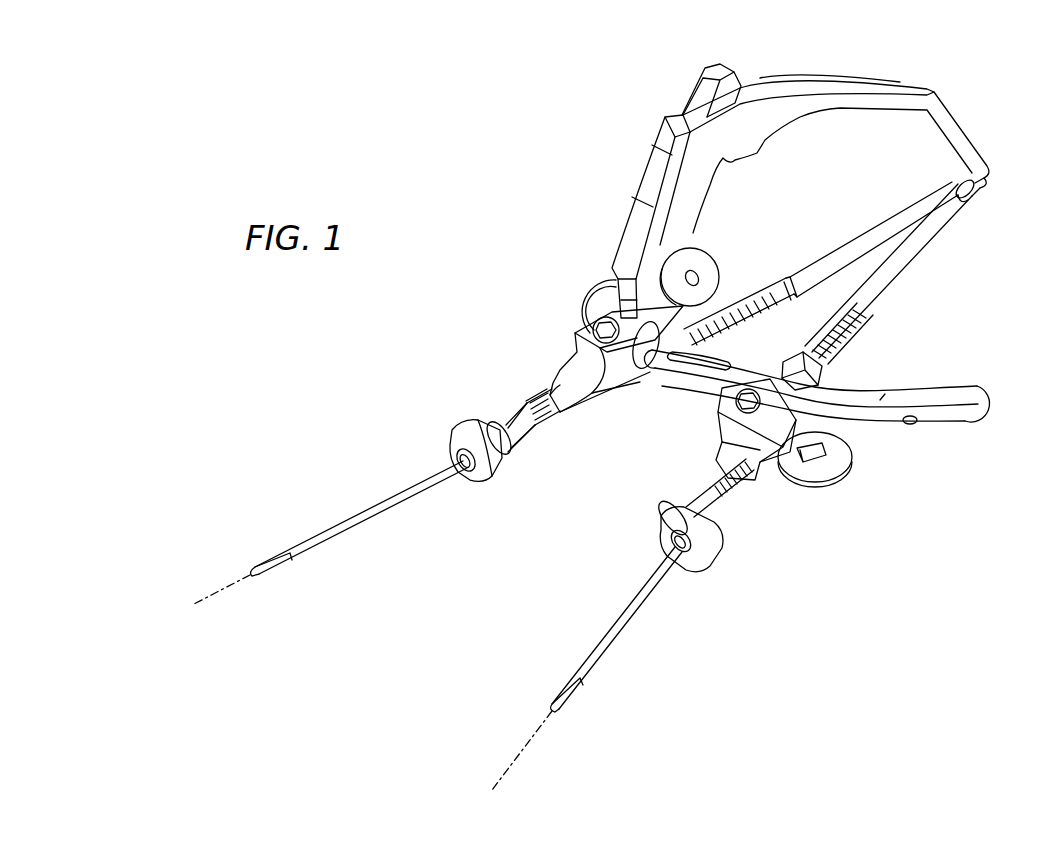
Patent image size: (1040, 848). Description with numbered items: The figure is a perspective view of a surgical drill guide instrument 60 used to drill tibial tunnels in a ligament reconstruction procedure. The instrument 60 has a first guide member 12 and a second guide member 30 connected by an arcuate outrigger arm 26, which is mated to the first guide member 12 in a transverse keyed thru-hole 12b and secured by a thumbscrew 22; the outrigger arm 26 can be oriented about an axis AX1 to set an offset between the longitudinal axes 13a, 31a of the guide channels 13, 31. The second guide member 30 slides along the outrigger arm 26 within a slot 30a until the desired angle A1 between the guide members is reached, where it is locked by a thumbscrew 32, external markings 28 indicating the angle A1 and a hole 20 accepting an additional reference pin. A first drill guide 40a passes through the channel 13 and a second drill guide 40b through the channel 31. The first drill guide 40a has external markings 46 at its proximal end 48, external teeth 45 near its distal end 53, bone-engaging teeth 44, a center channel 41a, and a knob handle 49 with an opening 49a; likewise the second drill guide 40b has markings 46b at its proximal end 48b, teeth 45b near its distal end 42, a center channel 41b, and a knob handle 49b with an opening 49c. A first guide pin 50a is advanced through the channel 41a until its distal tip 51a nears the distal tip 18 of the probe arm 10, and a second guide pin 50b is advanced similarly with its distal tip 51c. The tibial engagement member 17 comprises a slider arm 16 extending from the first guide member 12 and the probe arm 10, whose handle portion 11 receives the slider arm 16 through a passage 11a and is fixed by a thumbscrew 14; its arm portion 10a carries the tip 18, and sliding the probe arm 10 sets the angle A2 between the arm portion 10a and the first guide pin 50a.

The probe arm 10 is at (893, 97).
The arm portion 10a is at (830, 78).
The handle portion 11 is at (728, 158).
The passage 11a is at (678, 115).
The first guide member 12 is at (572, 370).
The keyed thru-hole 12b is at (634, 400).
The guide channel 13 is at (547, 395).
The longitudinal axis 13a is at (213, 590).
The thumbscrew 14 is at (703, 260).
The slider arm 16 is at (718, 67).
The tibial engagement member 17 is at (628, 124).
The distal tip 18 is at (993, 180).
The hole 20 is at (910, 428).
The thumbscrew 22 is at (582, 313).
The outrigger arm 26 is at (973, 393).
The external markings 28 is at (887, 400).
The second guide member 30 is at (723, 430).
The slot 30a is at (737, 353).
The guide channel 31 is at (747, 497).
The longitudinal axis 31a is at (530, 745).
The thumbscrew 32 is at (847, 477).
The first drill guide 40a is at (503, 470).
The second drill guide 40b is at (663, 533).
The center channel 41a is at (466, 470).
The center channel 41b is at (681, 565).
The distal end 42 is at (827, 328).
The teeth 44 is at (850, 250).
The external teeth 45 is at (727, 307).
The external teeth 45b is at (860, 342).
The external markings 46 is at (533, 410).
The external markings 46b is at (713, 482).
The proximal end 48 is at (525, 440).
The proximal end 48b is at (730, 503).
The knob handle 49 is at (462, 423).
The opening 49a is at (480, 485).
The knob handle 49b is at (713, 560).
The opening 49c is at (668, 548).
The first guide pin 50a is at (302, 553).
The second guide pin 50b is at (588, 658).
The distal tip 51a is at (967, 195).
The distal tip 51c is at (960, 173).
The distal end 53 is at (793, 270).
The surgical drill guide instrument 60 is at (455, 182).
The angle A1 is at (697, 490).
The angle A2 is at (862, 122).
The axis AX1 is at (600, 295).